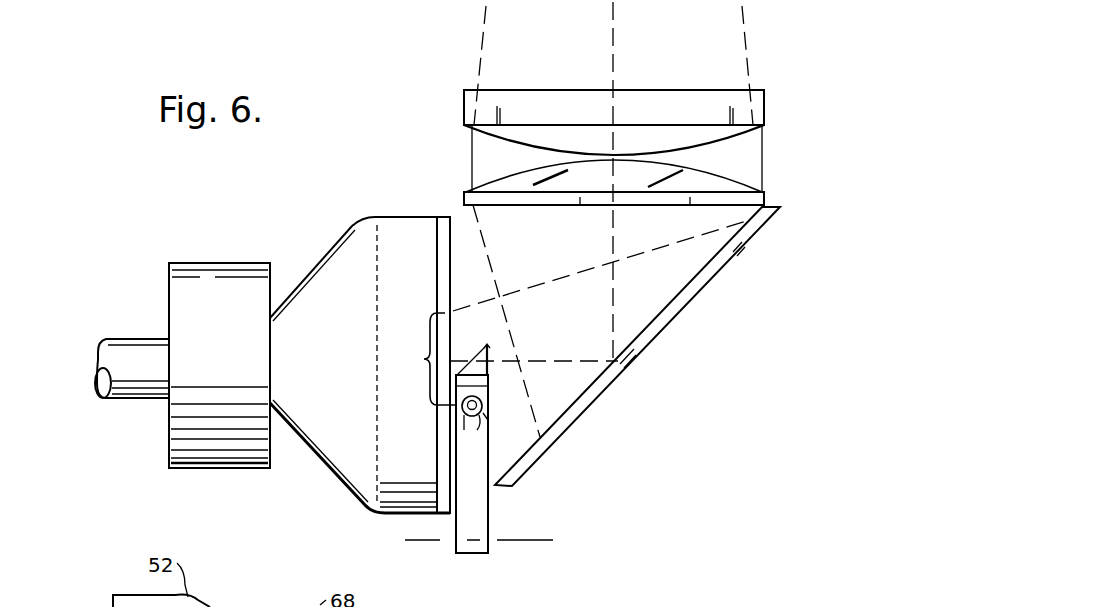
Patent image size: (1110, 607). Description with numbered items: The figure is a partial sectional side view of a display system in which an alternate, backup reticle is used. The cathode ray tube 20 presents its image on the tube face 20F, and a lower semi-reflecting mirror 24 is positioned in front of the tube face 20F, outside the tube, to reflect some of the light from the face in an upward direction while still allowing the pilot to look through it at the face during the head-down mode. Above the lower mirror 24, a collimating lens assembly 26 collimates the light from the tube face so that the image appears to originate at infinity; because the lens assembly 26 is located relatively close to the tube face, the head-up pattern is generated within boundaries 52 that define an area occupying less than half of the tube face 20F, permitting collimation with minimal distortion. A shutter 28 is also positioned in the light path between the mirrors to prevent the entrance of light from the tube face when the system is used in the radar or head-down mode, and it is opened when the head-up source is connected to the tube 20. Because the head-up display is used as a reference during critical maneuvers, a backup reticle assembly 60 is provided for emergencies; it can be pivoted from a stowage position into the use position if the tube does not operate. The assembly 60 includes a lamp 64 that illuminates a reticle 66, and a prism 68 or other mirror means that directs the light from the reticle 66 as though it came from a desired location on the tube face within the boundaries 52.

The cathode ray tube 20 is at (348, 228).
The tube face 20F is at (447, 270).
The boundaries 52 is at (419, 359).
The shutter 28 is at (464, 126).
The collimating lens assembly 26 is at (766, 190).
The lower semi-reflecting mirror 24 is at (713, 268).
The backup reticle assembly 60 is at (499, 492).
The prism 68 is at (490, 353).
The reticle 66 is at (487, 387).
The lamp 64 is at (489, 418).